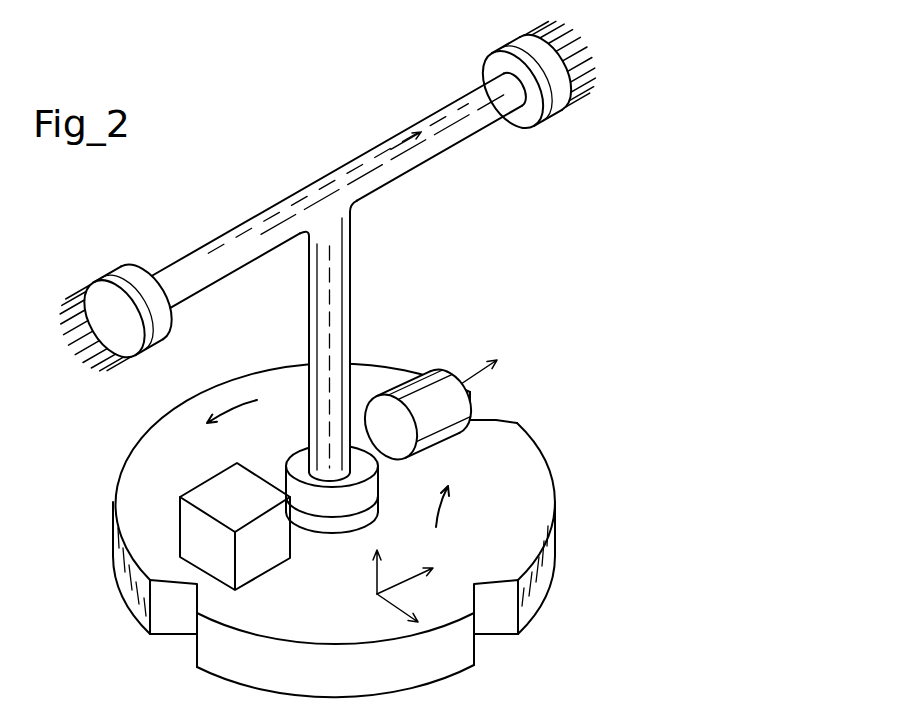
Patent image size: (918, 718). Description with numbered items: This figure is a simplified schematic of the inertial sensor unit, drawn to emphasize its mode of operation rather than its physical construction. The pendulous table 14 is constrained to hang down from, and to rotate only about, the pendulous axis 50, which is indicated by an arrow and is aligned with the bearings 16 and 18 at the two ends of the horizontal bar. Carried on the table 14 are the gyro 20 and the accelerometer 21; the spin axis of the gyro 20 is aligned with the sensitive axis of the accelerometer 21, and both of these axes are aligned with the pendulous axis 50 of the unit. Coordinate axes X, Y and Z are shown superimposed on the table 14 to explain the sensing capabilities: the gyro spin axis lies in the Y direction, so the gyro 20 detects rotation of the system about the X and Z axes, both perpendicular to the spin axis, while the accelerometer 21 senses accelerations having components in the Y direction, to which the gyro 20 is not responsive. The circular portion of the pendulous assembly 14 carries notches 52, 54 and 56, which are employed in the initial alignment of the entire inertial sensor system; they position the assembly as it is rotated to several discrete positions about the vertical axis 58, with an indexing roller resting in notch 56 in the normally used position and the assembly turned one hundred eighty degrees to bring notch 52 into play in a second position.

The pendulous table 14 is at (336, 520).
The bearing 16 is at (548, 108).
The bearing 18 is at (172, 330).
The gyro 20 is at (446, 438).
The accelerometer 21 is at (190, 522).
The pendulous axis 50 is at (334, 200).
The notch 52 is at (166, 623).
The notch 54 is at (503, 614).
The notch 56 is at (498, 412).
The vertical axis 58 is at (330, 272).